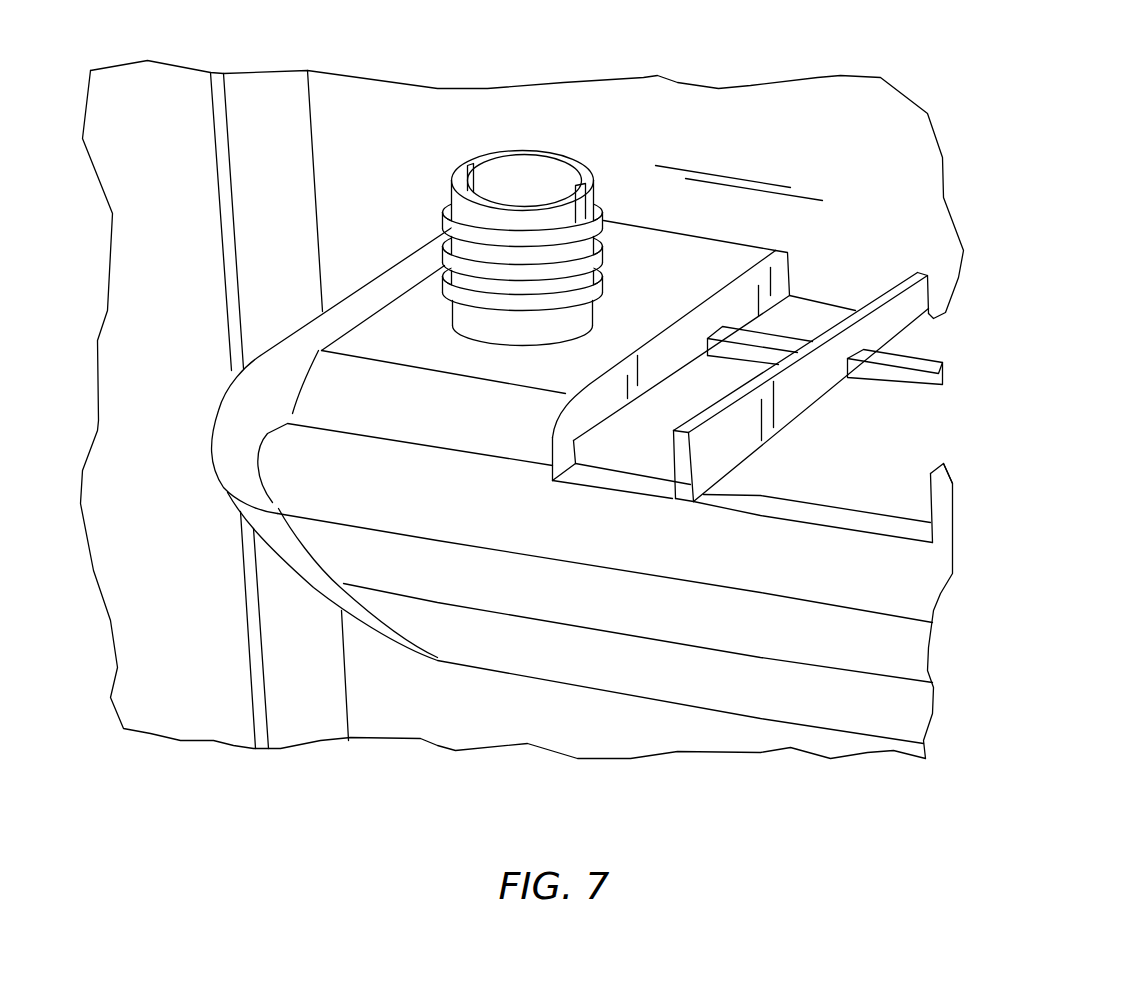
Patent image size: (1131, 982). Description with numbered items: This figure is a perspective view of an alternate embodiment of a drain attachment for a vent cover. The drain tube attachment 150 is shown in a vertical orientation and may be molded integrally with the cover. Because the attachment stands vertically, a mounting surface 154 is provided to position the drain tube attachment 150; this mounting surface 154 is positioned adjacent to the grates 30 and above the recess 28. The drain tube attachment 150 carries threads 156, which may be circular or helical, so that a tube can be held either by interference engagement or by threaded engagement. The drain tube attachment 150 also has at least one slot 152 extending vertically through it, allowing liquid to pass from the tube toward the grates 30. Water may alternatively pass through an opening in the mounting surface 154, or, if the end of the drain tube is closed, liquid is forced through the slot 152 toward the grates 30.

The recess 28 is at (968, 567).
The grates 30 is at (890, 474).
The drain tube attachment 150 is at (586, 137).
The slot 152 is at (452, 164).
The mounting surface 154 is at (723, 270).
The threads 156 is at (598, 215).